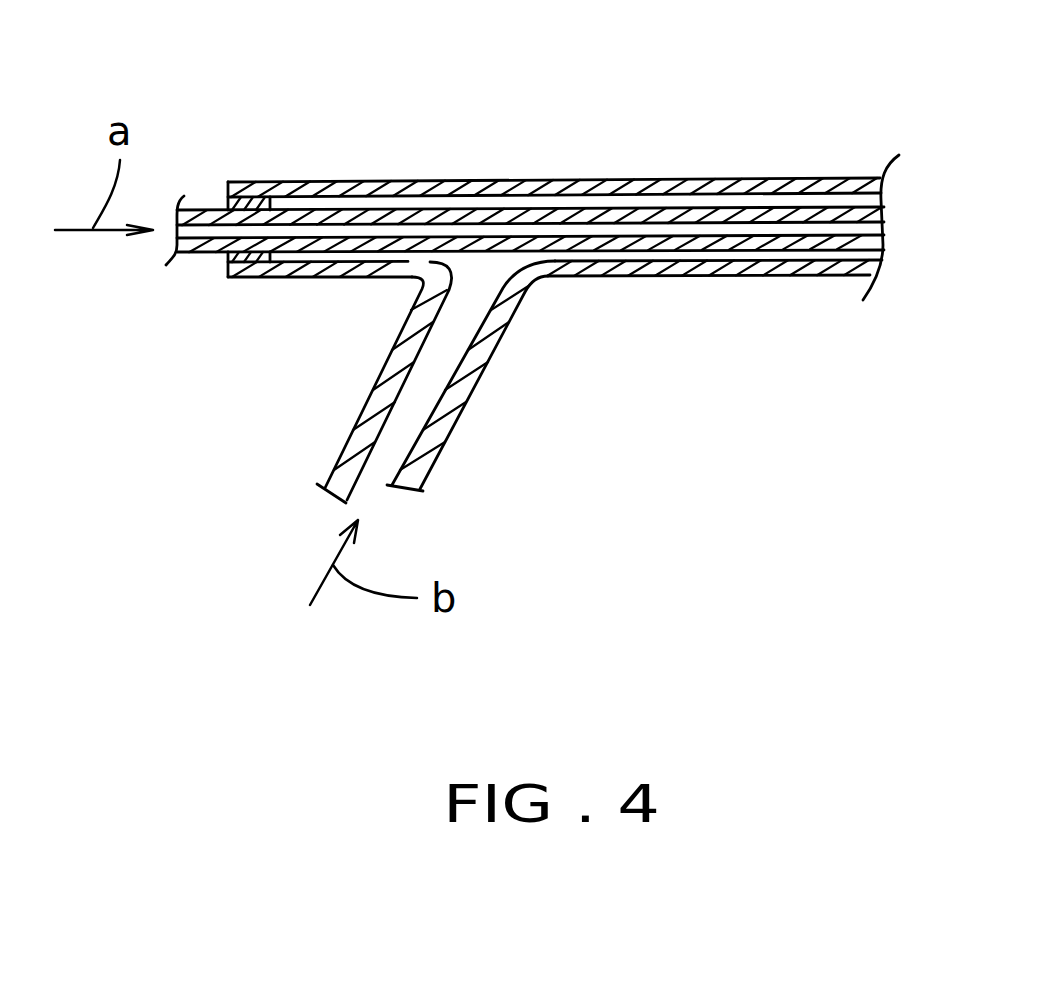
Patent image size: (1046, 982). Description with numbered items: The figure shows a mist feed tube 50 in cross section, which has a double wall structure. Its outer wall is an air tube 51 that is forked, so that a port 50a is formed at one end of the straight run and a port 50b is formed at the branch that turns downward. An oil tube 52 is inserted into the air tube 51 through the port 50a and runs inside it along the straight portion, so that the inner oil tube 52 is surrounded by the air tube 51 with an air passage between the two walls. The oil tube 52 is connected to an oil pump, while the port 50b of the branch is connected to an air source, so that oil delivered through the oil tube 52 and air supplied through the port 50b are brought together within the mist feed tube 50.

The mist feed tube 50 is at (532, 252).
The port 50a is at (227, 204).
The port 50b is at (413, 405).
The air tube 51 is at (552, 238).
The oil tube 52 is at (763, 210).